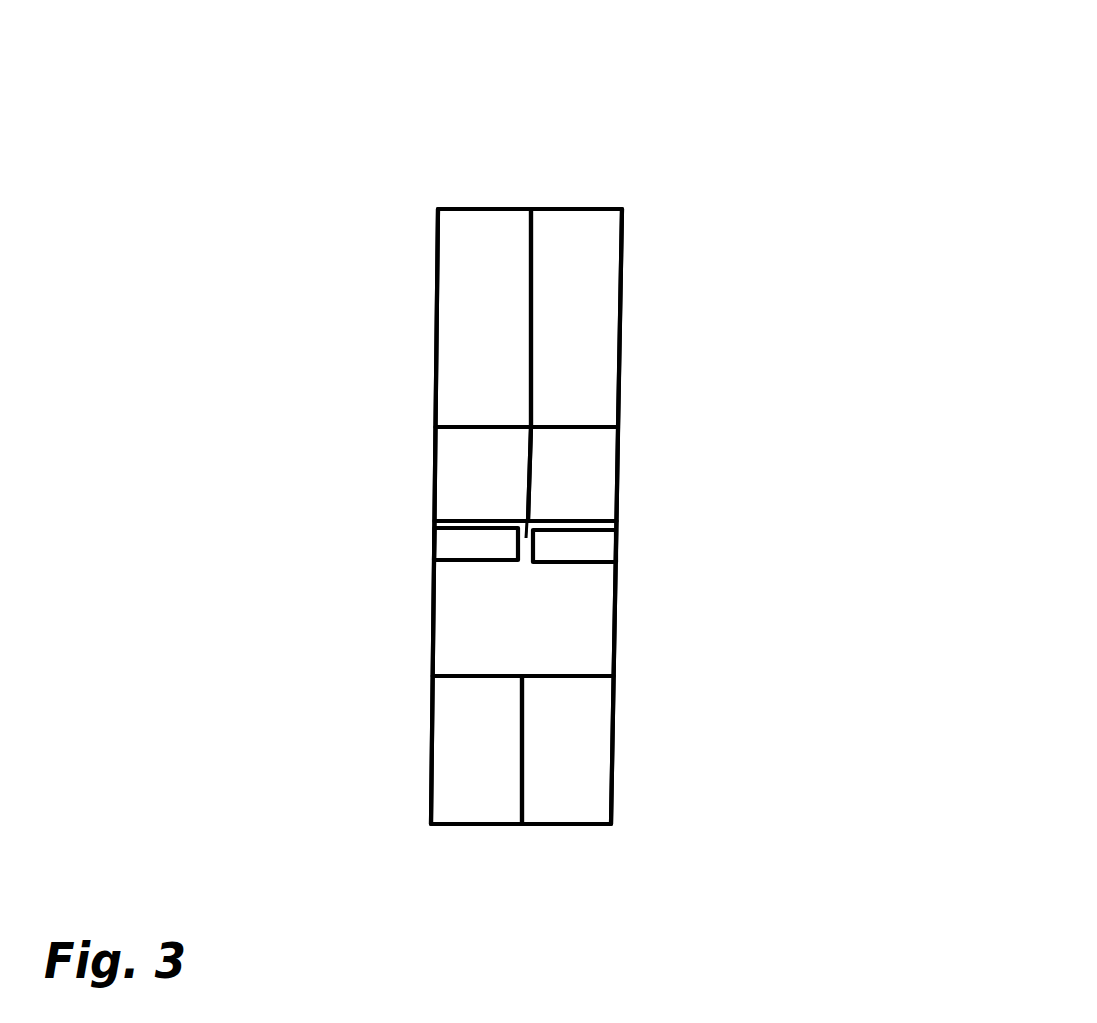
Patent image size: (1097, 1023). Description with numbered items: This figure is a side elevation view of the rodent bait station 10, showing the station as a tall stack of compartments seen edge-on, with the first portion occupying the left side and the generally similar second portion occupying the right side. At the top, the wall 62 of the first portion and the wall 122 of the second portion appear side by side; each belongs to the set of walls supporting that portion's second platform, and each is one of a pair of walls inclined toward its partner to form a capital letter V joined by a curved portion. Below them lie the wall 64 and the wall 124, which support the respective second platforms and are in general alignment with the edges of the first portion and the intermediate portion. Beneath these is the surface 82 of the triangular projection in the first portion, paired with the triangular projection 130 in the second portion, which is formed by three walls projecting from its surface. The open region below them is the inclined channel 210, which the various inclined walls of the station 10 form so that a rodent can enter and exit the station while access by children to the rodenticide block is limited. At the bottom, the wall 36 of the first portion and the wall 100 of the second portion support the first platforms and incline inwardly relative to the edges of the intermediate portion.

The rodent bait station 10 is at (821, 61).
The wall 62 is at (468, 298).
The wall 122 is at (589, 300).
The wall 64 is at (465, 460).
The wall 124 is at (594, 466).
The surface 82 is at (453, 547).
The triangular projection 130 is at (593, 548).
The inclined channel 210 is at (473, 617).
The wall 36 is at (463, 735).
The wall 100 is at (580, 722).